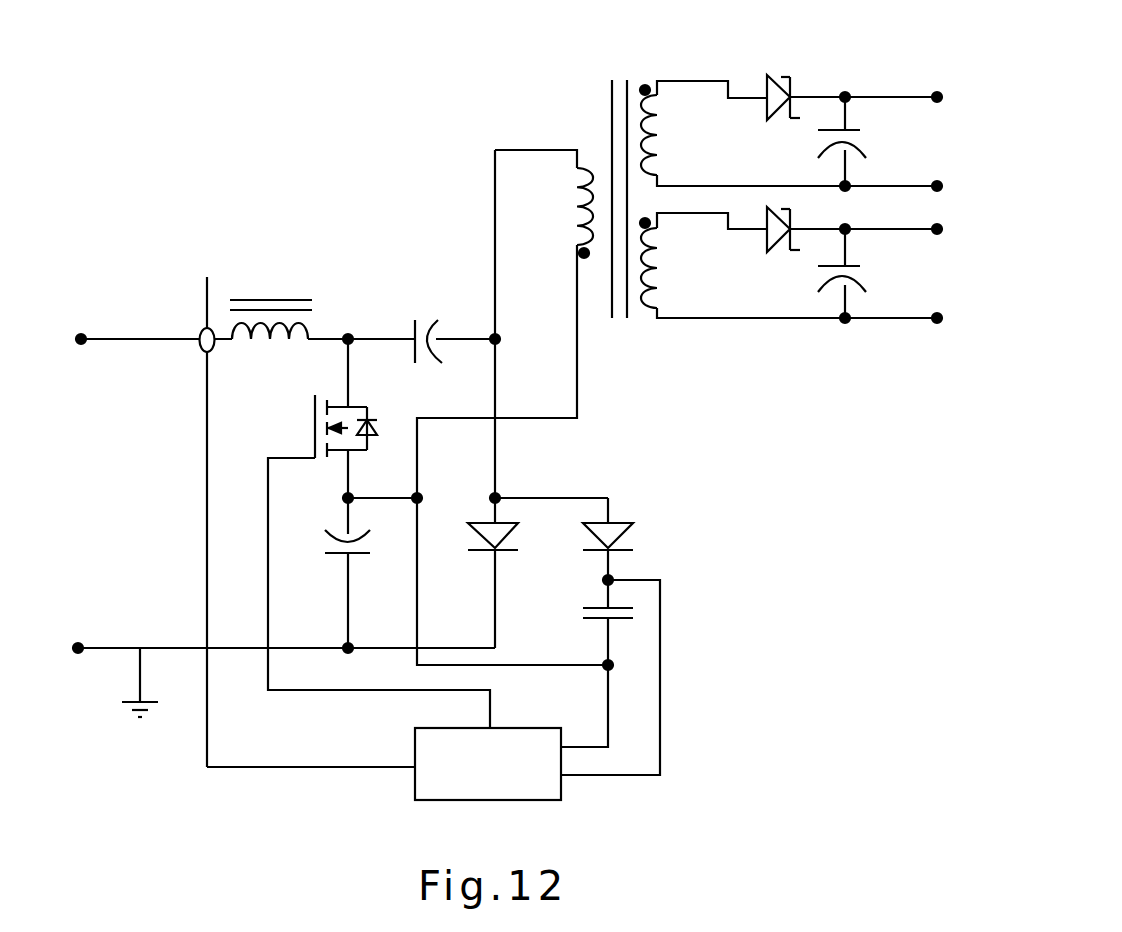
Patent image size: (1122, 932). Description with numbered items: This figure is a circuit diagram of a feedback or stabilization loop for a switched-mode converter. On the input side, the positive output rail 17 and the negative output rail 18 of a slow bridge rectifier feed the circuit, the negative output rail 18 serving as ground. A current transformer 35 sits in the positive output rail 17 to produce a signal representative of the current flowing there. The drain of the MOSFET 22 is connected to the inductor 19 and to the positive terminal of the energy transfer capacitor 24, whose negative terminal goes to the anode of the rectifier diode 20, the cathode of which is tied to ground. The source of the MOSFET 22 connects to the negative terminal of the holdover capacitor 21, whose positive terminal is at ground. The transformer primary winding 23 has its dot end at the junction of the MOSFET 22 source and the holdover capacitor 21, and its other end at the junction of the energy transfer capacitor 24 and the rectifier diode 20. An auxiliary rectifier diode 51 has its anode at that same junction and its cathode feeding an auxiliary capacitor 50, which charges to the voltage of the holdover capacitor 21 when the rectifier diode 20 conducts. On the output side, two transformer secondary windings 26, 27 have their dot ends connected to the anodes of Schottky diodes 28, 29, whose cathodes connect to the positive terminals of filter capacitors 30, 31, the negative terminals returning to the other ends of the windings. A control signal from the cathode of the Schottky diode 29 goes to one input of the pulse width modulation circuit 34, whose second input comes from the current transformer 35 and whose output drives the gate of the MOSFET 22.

The positive output rail 17 is at (120, 338).
The negative output rail 18 is at (110, 648).
The inductor 19 is at (275, 300).
The rectifier diode 20 is at (510, 552).
The holdover capacitor 21 is at (338, 555).
The MOSFET 22 is at (338, 405).
The transformer primary winding 23 is at (592, 165).
The energy transfer capacitor 24 is at (412, 318).
The transformer secondary winding 26 is at (655, 147).
The transformer secondary winding 27 is at (655, 262).
The Schottky diode 28 is at (775, 74).
The Schottky diode 29 is at (773, 248).
The filter capacitor 30 is at (858, 133).
The filter capacitor 31 is at (858, 265).
The pulse width modulation circuit 34 is at (415, 738).
The current transformer 35 is at (301, 508).
The auxiliary capacitor 50 is at (597, 620).
The auxiliary rectifier diode 51 is at (630, 528).